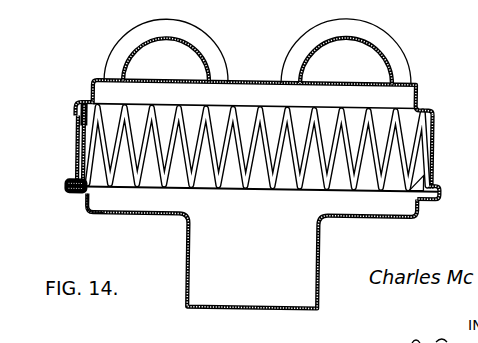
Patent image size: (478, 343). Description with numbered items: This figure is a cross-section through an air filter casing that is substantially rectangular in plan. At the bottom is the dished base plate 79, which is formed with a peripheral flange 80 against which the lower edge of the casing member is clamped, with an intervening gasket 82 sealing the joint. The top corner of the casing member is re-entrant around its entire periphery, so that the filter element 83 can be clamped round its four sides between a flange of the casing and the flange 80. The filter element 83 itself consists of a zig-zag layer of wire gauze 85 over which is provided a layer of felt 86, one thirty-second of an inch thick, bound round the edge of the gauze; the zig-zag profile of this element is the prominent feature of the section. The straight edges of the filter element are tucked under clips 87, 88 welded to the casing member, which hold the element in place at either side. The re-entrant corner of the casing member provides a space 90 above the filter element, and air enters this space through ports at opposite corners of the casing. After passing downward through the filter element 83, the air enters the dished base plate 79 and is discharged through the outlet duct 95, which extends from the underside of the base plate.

The base plate 79 is at (141, 216).
The peripheral flange 80 is at (79, 196).
The gasket 82 is at (72, 181).
The filter element 83 is at (205, 101).
The wire gauze 85 is at (75, 151).
The layer of felt 86 is at (138, 185).
The clip 87 is at (86, 104).
The clip 88 is at (420, 183).
The space 90 is at (266, 93).
The outlet duct 95 is at (188, 259).